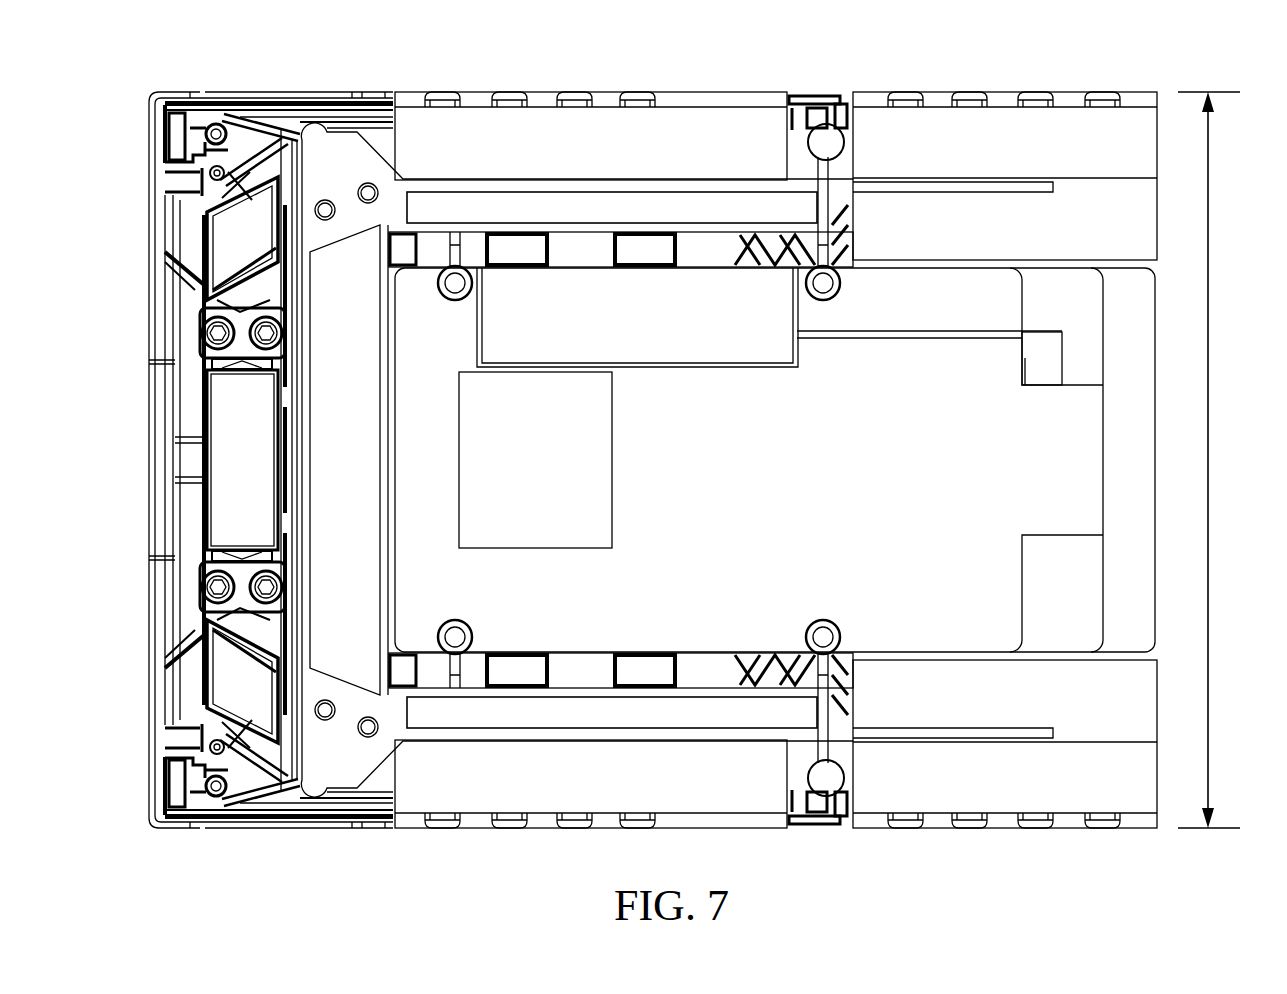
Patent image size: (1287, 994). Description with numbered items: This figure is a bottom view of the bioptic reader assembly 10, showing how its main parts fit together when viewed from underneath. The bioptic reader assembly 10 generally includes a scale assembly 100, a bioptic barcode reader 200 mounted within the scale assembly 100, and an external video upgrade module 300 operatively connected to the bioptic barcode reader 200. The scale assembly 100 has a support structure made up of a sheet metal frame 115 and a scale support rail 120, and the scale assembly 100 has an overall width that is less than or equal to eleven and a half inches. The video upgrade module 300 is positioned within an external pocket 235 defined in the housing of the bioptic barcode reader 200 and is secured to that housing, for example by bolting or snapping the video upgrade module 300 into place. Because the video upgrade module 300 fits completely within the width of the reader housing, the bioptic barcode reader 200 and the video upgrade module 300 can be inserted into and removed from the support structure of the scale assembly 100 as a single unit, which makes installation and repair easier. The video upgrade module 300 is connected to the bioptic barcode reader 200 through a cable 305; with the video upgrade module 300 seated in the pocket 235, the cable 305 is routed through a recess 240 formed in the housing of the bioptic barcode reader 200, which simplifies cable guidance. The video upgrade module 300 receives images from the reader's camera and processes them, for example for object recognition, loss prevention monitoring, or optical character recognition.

The bioptic reader assembly 10 is at (157, 70).
The scale assembly 100 is at (267, 82).
The sheet metal frame 115 is at (478, 92).
The scale support rail 120 is at (696, 190).
The bioptic barcode reader 200 is at (779, 486).
The external pocket 235 is at (697, 367).
The recess 240 is at (882, 341).
The video upgrade module 300 is at (663, 331).
The cable 305 is at (1057, 331).